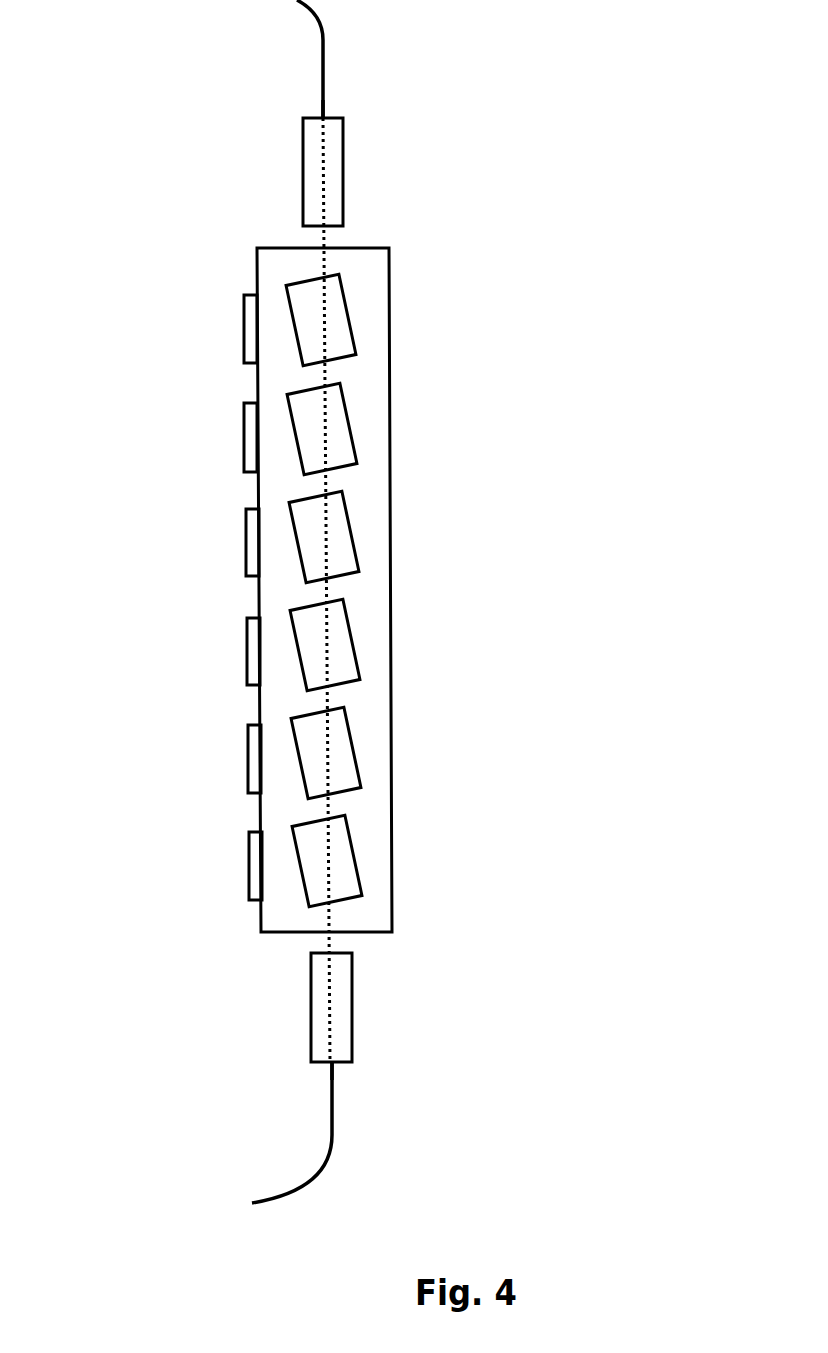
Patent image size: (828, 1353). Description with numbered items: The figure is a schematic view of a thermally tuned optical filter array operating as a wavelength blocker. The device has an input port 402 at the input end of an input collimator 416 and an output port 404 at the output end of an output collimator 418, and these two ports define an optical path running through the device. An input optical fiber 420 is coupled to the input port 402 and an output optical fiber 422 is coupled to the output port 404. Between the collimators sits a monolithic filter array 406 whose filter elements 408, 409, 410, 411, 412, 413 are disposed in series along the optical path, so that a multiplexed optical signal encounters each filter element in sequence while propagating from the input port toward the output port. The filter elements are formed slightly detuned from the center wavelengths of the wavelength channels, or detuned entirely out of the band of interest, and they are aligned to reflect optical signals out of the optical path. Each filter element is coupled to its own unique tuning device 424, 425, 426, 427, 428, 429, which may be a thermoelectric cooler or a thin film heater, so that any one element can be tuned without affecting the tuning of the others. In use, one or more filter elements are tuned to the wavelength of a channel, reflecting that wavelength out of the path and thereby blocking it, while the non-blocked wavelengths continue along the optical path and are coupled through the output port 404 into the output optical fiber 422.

The input port 402 is at (327, 117).
The output port 404 is at (333, 1063).
The monolithic filter array 406 is at (392, 557).
The filter element 408 is at (348, 313).
The filter element 409 is at (349, 416).
The filter element 410 is at (350, 526).
The filter element 411 is at (352, 633).
The filter element 412 is at (353, 745).
The filter element 413 is at (355, 853).
The input collimator 416 is at (303, 176).
The output collimator 418 is at (311, 1003).
The input optical fiber 420 is at (323, 70).
The output optical fiber 422 is at (330, 1107).
The tuning device 424 is at (244, 322).
The tuning device 425 is at (244, 438).
The tuning device 426 is at (246, 543).
The tuning device 427 is at (247, 652).
The tuning device 428 is at (248, 757).
The tuning device 429 is at (249, 862).